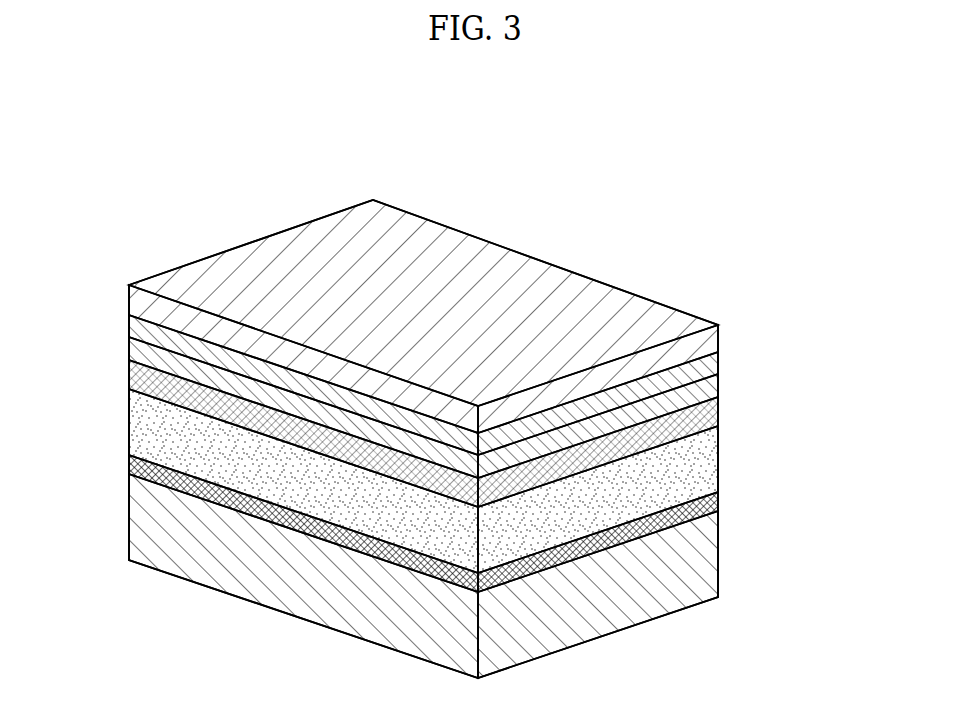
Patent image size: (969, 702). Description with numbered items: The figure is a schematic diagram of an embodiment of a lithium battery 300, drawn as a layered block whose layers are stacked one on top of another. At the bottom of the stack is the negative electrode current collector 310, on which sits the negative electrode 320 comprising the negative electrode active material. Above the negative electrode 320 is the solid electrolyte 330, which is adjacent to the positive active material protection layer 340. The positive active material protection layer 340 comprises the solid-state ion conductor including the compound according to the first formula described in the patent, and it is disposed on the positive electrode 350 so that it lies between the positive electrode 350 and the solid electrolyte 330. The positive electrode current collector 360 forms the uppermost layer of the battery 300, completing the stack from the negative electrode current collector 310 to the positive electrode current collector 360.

The battery 300 is at (118, 160).
The negative electrode current collector 310 is at (718, 582).
The negative electrode 320 is at (718, 503).
The solid electrolyte 330 is at (718, 460).
The positive active material protection layer 340 is at (718, 414).
The positive electrode 350 is at (718, 378).
The positive electrode current collector 360 is at (718, 326).